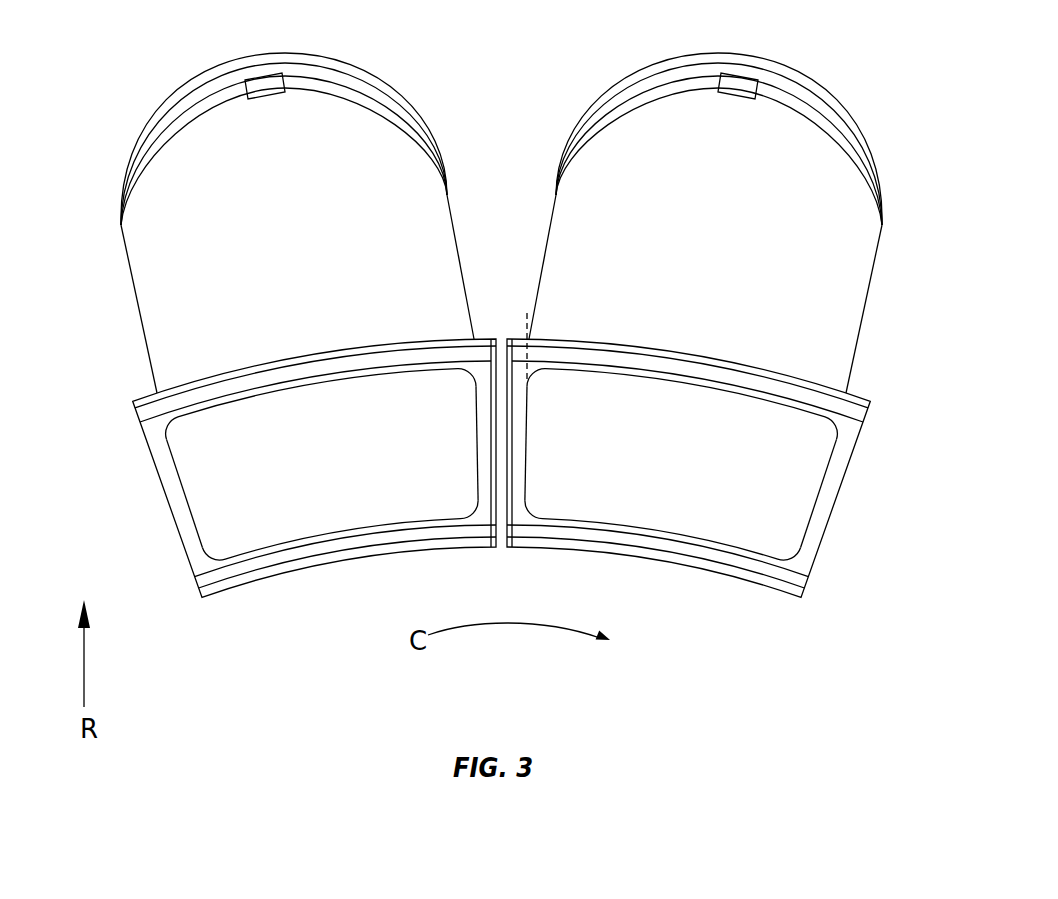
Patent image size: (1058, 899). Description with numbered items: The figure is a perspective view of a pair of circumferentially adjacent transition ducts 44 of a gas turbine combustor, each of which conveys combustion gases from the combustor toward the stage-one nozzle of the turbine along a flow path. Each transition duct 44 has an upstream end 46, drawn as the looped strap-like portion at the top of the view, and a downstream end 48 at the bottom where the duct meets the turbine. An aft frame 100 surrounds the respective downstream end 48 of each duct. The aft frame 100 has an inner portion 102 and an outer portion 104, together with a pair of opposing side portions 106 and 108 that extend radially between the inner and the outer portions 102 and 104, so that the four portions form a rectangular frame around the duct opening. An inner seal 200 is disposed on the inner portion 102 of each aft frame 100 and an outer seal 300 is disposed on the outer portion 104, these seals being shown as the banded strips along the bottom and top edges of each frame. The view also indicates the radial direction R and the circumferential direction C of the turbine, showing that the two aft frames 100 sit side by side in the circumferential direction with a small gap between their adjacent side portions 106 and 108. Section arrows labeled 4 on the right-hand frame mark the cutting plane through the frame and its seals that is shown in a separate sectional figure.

The transition duct 44 is at (114, 99).
The upstream end 46 is at (398, 98).
The downstream end 48 is at (112, 387).
The aft frame 100 is at (158, 474).
The inner portion 102 is at (332, 536).
The outer portion 104 is at (350, 377).
The side portion 106 is at (474, 453).
The side portion 108 is at (196, 507).
The inner seal 200 is at (480, 550).
The outer seal 300 is at (392, 360).
The section line 4- 4 is at (527, 313).